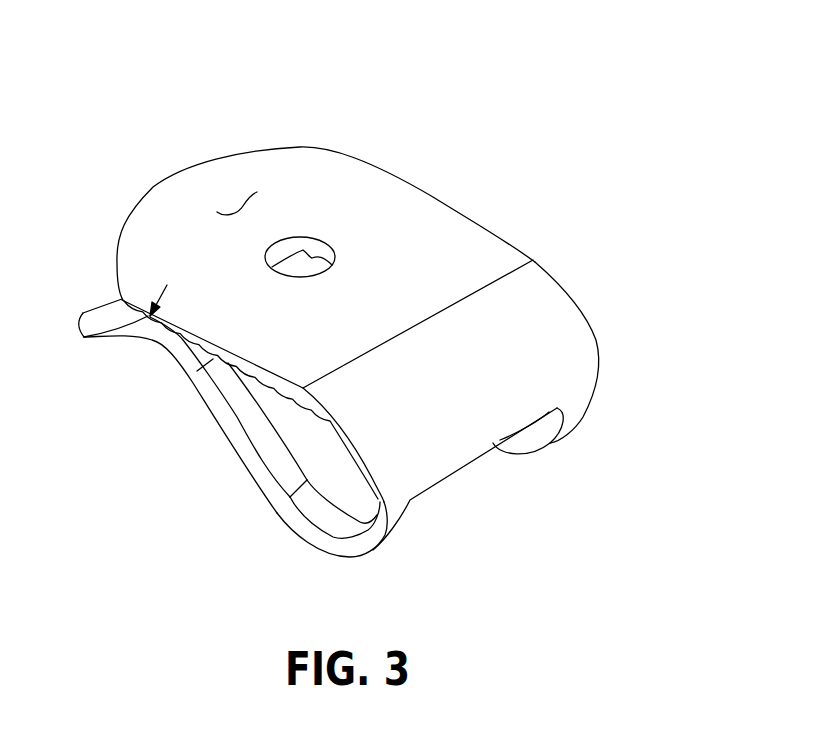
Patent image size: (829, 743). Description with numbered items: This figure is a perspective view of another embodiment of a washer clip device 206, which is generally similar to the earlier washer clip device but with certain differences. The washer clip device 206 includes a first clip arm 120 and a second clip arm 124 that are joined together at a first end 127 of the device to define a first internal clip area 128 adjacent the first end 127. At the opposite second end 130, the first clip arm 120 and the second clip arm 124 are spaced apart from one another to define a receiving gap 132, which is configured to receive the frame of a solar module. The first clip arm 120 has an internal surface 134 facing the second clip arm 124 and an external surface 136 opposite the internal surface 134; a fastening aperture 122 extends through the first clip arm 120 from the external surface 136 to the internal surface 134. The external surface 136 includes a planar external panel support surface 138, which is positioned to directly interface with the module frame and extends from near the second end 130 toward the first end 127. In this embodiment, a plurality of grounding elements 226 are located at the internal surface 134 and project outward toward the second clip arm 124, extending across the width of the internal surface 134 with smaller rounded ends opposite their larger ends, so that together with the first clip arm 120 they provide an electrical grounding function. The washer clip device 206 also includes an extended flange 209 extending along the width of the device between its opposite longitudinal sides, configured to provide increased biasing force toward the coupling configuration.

The washer clip device 206 is at (368, 93).
The external surface 136 is at (402, 208).
The planar external panel support surface 138 is at (239, 205).
The fastening aperture 122 is at (288, 237).
The second end 130 is at (110, 293).
The first clip arm 120 is at (252, 347).
The internal surface 134 is at (264, 380).
The receiving gap 132 is at (135, 338).
The second clip arm 124 is at (203, 414).
The plurality of grounding elements 226 is at (278, 397).
The first internal clip area 128 is at (327, 477).
The extended flange 209 is at (467, 410).
The first end 127 is at (590, 412).